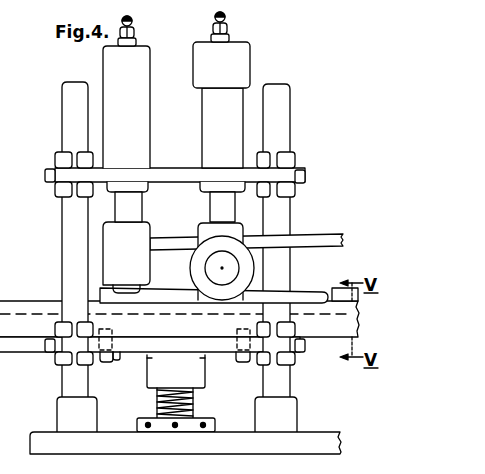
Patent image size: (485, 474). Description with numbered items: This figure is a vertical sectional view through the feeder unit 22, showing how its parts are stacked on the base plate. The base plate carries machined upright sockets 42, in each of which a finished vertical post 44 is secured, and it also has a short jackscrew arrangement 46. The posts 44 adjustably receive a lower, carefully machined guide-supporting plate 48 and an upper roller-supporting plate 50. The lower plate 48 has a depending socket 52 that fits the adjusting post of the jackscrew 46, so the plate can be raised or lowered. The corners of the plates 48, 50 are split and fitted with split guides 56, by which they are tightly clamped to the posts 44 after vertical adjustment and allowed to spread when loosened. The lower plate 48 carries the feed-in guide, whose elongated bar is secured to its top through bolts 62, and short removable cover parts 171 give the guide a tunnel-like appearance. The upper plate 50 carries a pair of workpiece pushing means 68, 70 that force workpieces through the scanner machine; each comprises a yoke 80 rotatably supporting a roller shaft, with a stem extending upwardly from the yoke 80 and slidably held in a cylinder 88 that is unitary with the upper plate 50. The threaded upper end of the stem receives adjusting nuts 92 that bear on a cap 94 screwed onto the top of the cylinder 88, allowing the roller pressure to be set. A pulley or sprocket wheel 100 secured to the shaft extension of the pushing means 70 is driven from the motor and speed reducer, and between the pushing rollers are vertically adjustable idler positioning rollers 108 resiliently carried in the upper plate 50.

The feeder unit 22 is at (54, 124).
The upright socket 42 is at (57, 406).
The vertical post 44 is at (66, 93).
The jackscrew arrangement 46 is at (158, 408).
The lower guide-supporting plate 48 is at (139, 354).
The upper roller-supporting plate 50 is at (185, 173).
The depending socket 52 is at (194, 370).
The split guide 56 is at (58, 160).
The bolt 62 is at (99, 358).
The workpiece pushing means 68 is at (165, 209).
The workpiece pushing means 70 is at (207, 209).
The yoke 80 is at (117, 219).
The cylinder 88 is at (206, 105).
The adjusting nuts 92 is at (213, 30).
The cap 94 is at (246, 66).
The pulley or sprocket wheel 100 is at (190, 264).
The idler positioning rollers 108 is at (186, 245).
The removable cover part 171 is at (356, 297).